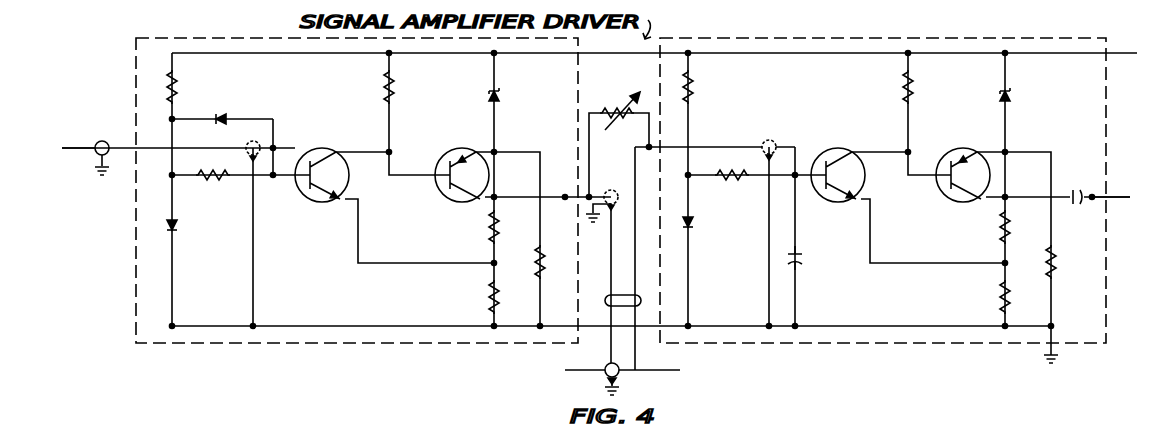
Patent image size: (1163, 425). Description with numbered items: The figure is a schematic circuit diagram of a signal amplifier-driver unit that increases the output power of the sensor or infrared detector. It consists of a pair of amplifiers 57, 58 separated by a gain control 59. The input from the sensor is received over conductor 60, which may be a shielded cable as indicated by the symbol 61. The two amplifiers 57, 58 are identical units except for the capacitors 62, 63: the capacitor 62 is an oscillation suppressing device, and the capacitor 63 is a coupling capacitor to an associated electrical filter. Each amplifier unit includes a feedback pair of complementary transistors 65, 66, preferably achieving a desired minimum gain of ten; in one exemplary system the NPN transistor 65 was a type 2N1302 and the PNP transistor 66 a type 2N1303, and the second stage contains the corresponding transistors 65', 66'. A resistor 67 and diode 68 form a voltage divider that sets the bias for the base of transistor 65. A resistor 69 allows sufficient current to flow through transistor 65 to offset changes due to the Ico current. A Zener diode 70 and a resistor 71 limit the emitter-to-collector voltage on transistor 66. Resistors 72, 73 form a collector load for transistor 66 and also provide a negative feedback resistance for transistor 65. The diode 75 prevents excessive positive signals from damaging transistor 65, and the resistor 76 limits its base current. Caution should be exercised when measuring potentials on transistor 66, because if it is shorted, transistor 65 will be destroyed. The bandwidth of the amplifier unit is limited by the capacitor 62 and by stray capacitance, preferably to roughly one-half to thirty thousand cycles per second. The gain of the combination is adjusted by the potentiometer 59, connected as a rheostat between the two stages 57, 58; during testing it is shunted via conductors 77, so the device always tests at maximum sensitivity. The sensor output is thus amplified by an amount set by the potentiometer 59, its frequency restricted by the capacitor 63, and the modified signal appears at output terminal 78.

The amplifier 57 is at (309, 359).
The amplifier 58 is at (857, 362).
The gain control 59 is at (622, 127).
The conductor 60 is at (75, 147).
The symbol 61 is at (114, 133).
The capacitor 62 is at (803, 259).
The capacitor 63 is at (1075, 180).
The transistor 65 is at (322, 164).
The transistor 65' is at (854, 175).
The transistor 66 is at (462, 164).
The transistor 66' is at (963, 187).
The resistor 67 is at (178, 89).
The diode 68 is at (178, 236).
The resistor 69 is at (396, 93).
The Zener diode 70 is at (497, 103).
The resistor 71 is at (535, 265).
The resistor 72 is at (489, 228).
The resistor 73 is at (489, 300).
The diode 75 is at (223, 117).
The resistor 76 is at (215, 181).
The conductors 77 is at (605, 301).
The output terminal 78 is at (1116, 190).